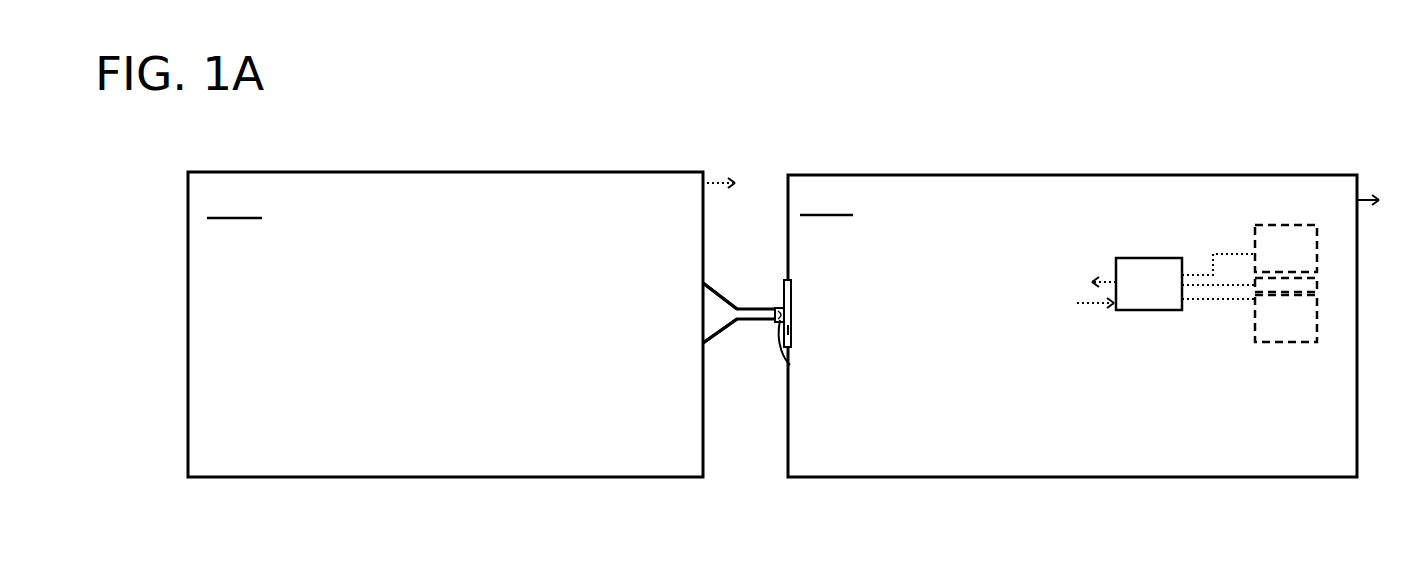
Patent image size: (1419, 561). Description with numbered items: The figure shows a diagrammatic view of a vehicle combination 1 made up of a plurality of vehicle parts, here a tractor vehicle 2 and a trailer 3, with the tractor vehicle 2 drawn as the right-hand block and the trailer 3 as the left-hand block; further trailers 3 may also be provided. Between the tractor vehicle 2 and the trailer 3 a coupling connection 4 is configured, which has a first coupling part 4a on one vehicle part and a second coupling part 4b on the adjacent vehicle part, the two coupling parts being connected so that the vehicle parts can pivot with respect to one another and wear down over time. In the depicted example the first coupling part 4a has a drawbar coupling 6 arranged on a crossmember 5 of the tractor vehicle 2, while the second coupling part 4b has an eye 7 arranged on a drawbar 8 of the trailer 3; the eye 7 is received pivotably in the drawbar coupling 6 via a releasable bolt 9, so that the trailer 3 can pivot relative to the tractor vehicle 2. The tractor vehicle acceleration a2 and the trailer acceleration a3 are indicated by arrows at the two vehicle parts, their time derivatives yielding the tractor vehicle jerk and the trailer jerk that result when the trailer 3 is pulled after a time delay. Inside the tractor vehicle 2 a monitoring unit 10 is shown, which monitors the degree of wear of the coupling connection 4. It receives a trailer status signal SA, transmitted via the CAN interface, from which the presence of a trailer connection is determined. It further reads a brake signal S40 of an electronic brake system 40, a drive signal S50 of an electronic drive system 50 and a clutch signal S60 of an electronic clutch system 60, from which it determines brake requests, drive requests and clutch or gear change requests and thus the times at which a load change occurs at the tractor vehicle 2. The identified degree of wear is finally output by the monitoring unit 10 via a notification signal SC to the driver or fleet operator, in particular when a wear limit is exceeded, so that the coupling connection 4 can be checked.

The vehicle combination 1 is at (1121, 95).
The tractor vehicle 2 is at (957, 175).
The trailer 3 is at (456, 171).
The coupling connection 4 is at (748, 360).
The first coupling part 4a is at (797, 313).
The second coupling part 4b is at (721, 343).
The crossmember 5 is at (792, 330).
The drawbar coupling 6 is at (793, 307).
The eye 7 is at (773, 303).
The drawbar 8 is at (713, 307).
The releasable bolt 9 is at (790, 365).
The monitoring unit 10 is at (1170, 302).
The electronic brake system 40 is at (1283, 224).
The electronic drive system 50 is at (1287, 342).
The electronic clutch system 60 is at (1320, 278).
The tractor vehicle acceleration a2 is at (1360, 200).
The trailer acceleration a3 is at (718, 178).
The notification signal SC is at (1100, 280).
The trailer status signal SA is at (1090, 304).
The brake signal S40 is at (1222, 253).
The drive signal S50 is at (1200, 288).
The clutch signal S60 is at (1223, 300).